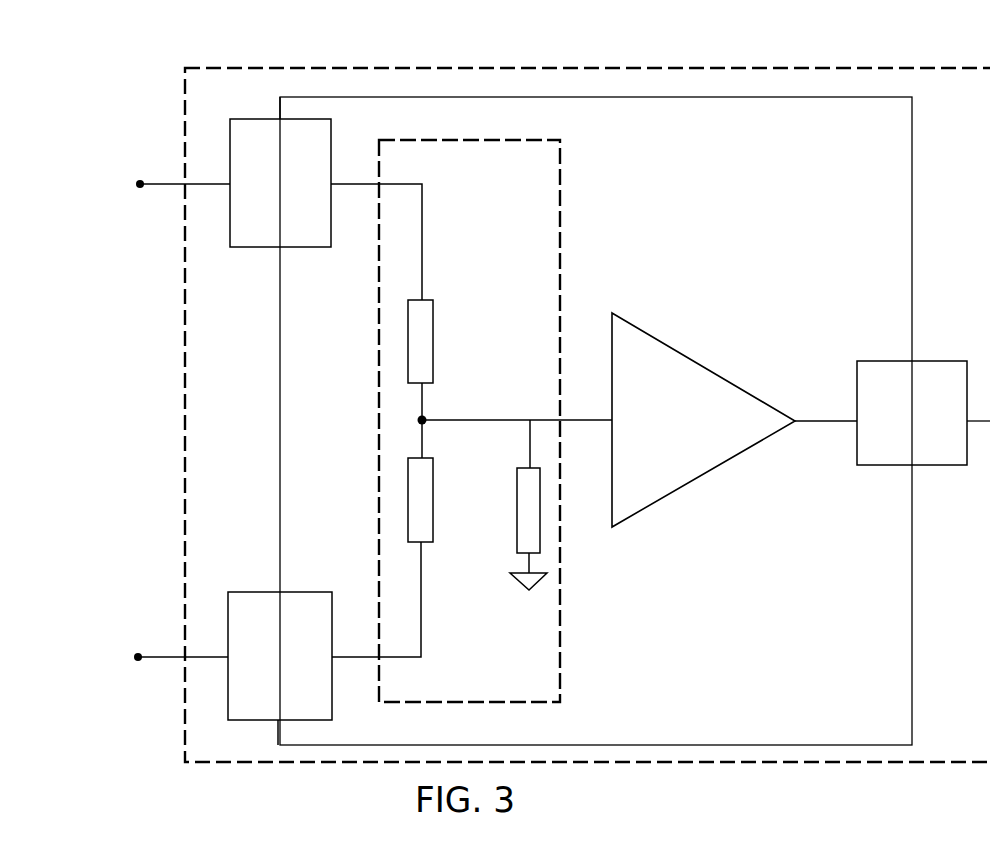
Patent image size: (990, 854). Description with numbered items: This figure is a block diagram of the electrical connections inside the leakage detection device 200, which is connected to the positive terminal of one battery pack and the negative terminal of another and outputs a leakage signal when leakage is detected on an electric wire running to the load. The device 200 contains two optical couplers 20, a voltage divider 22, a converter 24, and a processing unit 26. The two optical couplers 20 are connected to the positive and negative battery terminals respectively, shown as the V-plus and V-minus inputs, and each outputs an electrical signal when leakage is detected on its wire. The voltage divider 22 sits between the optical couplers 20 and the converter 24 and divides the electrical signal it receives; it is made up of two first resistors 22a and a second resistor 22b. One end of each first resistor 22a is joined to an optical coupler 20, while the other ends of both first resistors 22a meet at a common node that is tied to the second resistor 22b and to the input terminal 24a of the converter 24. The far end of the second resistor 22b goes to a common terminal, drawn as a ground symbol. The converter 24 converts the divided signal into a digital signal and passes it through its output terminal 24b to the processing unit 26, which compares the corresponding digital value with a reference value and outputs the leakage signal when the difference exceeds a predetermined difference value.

The leakage detection device 200 is at (182, 133).
The optical coupler 20 is at (238, 254).
The voltage divider 22 is at (566, 181).
The first resistor 22a is at (418, 328).
The second resistor 22b is at (530, 528).
The converter 24 is at (645, 483).
The input terminal 24a is at (610, 418).
The output terminal 24b is at (796, 415).
The processing unit 26 is at (868, 448).